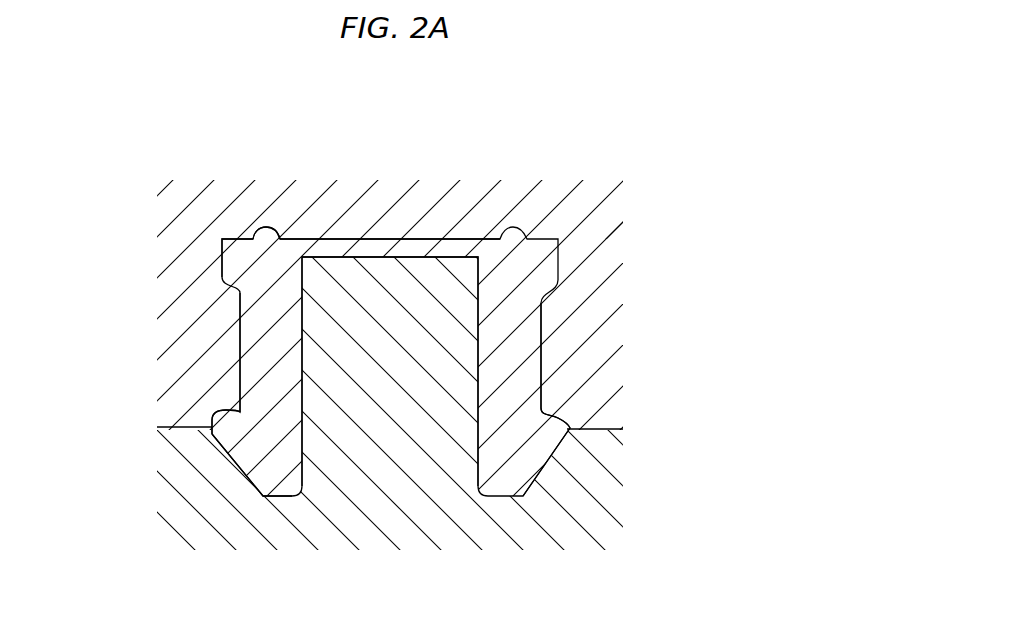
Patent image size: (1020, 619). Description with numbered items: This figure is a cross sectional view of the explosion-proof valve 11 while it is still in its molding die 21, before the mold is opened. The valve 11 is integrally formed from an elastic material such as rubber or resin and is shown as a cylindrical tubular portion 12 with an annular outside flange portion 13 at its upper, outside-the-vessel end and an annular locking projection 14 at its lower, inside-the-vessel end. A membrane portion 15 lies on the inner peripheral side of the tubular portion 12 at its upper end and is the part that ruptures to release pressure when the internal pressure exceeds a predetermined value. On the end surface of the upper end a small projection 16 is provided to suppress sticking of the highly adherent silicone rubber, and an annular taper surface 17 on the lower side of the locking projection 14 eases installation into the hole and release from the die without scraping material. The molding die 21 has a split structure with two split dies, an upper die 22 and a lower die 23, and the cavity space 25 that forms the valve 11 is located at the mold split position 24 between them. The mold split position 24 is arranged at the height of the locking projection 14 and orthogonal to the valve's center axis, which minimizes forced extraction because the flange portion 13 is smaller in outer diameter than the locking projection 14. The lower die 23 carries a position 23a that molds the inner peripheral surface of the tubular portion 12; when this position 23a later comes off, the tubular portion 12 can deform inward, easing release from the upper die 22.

The explosion-proof valve 11 is at (553, 240).
The tubular portion 12 is at (262, 361).
The outside flange portion 13 is at (232, 261).
The locking projection 14 is at (212, 435).
The membrane portion 15 is at (370, 250).
The projection 16 is at (260, 224).
The taper surface 17 is at (226, 492).
The molding die 21 is at (618, 295).
The one split die (upper die) 22 is at (592, 236).
The other split die (lower die) 23 is at (603, 500).
The position molding inner peripheral surface 23a is at (405, 303).
The mold split position 24 is at (608, 429).
The cavity space 25 is at (534, 354).